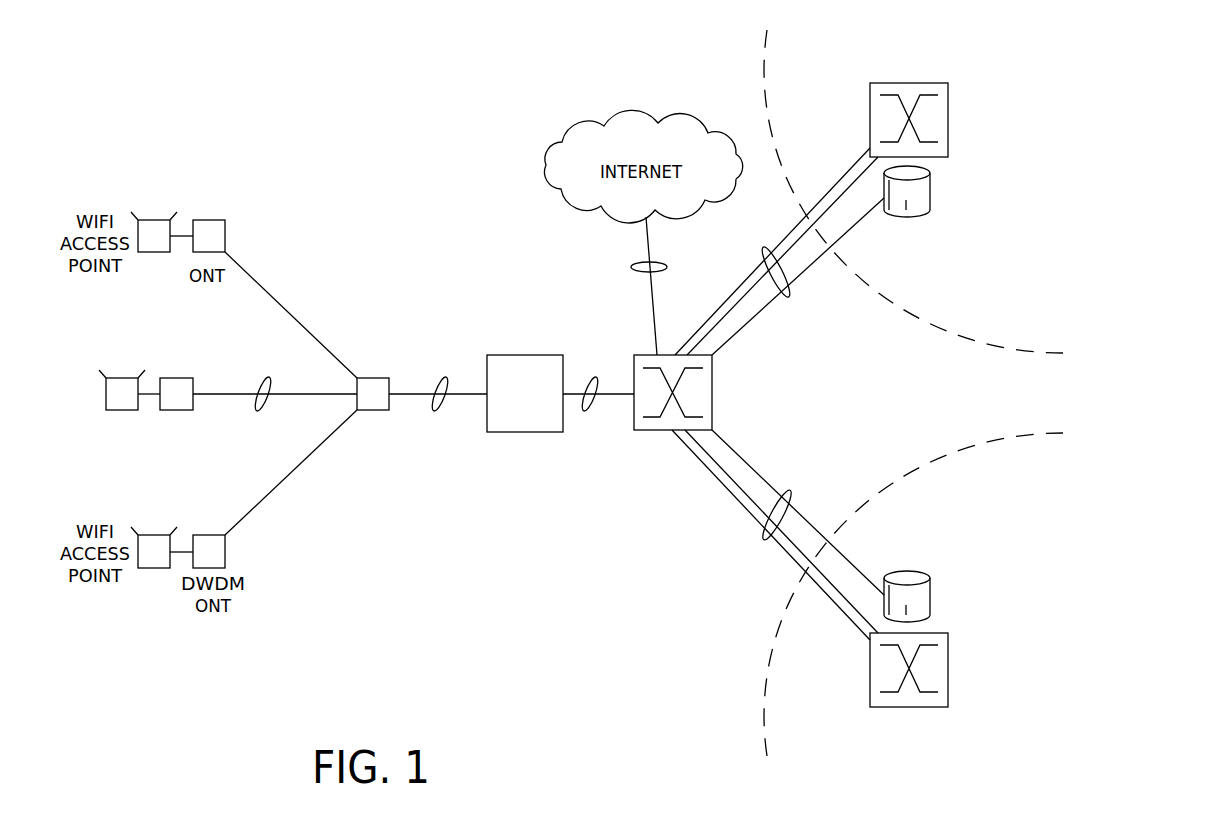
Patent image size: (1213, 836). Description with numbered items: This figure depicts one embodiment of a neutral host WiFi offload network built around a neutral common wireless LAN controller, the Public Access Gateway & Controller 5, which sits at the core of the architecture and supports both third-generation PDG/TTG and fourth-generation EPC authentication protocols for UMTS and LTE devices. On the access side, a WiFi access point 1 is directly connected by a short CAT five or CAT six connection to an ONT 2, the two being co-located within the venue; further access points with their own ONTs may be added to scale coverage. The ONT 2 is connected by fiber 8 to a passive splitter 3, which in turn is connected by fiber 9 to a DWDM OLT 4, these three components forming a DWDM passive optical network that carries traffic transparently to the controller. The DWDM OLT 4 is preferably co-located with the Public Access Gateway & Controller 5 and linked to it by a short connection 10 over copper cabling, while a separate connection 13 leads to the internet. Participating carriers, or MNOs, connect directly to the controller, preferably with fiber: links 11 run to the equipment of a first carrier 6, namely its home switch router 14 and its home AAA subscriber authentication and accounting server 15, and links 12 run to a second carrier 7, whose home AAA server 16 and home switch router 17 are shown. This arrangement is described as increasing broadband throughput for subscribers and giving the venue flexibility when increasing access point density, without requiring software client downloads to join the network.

The WiFi access point 1 is at (118, 378).
The ONT 2 is at (176, 378).
The passive splitter 3 is at (370, 378).
The DWDM OLT 4 is at (508, 355).
The Public Access Gateway & Controller 5 is at (712, 393).
The carrier 1 network 6 is at (1056, 297).
The carrier 2 network 7 is at (1056, 517).
The fiber 8 is at (268, 378).
The fiber 9 is at (445, 378).
The link between DWDM OLT and public access gateway 10 is at (595, 378).
The links to carrier 1 11 is at (790, 298).
The links to carrier 2 12 is at (790, 490).
The link to internet 13 is at (631, 265).
The home switch router of carrier 1 14 is at (870, 110).
The home AAA subscriber authentication accounting server of carrier 1 15 is at (905, 217).
The home AAA subscriber authentication accounting server of carrier 2 16 is at (905, 571).
The home switch router of carrier 2 17 is at (870, 672).